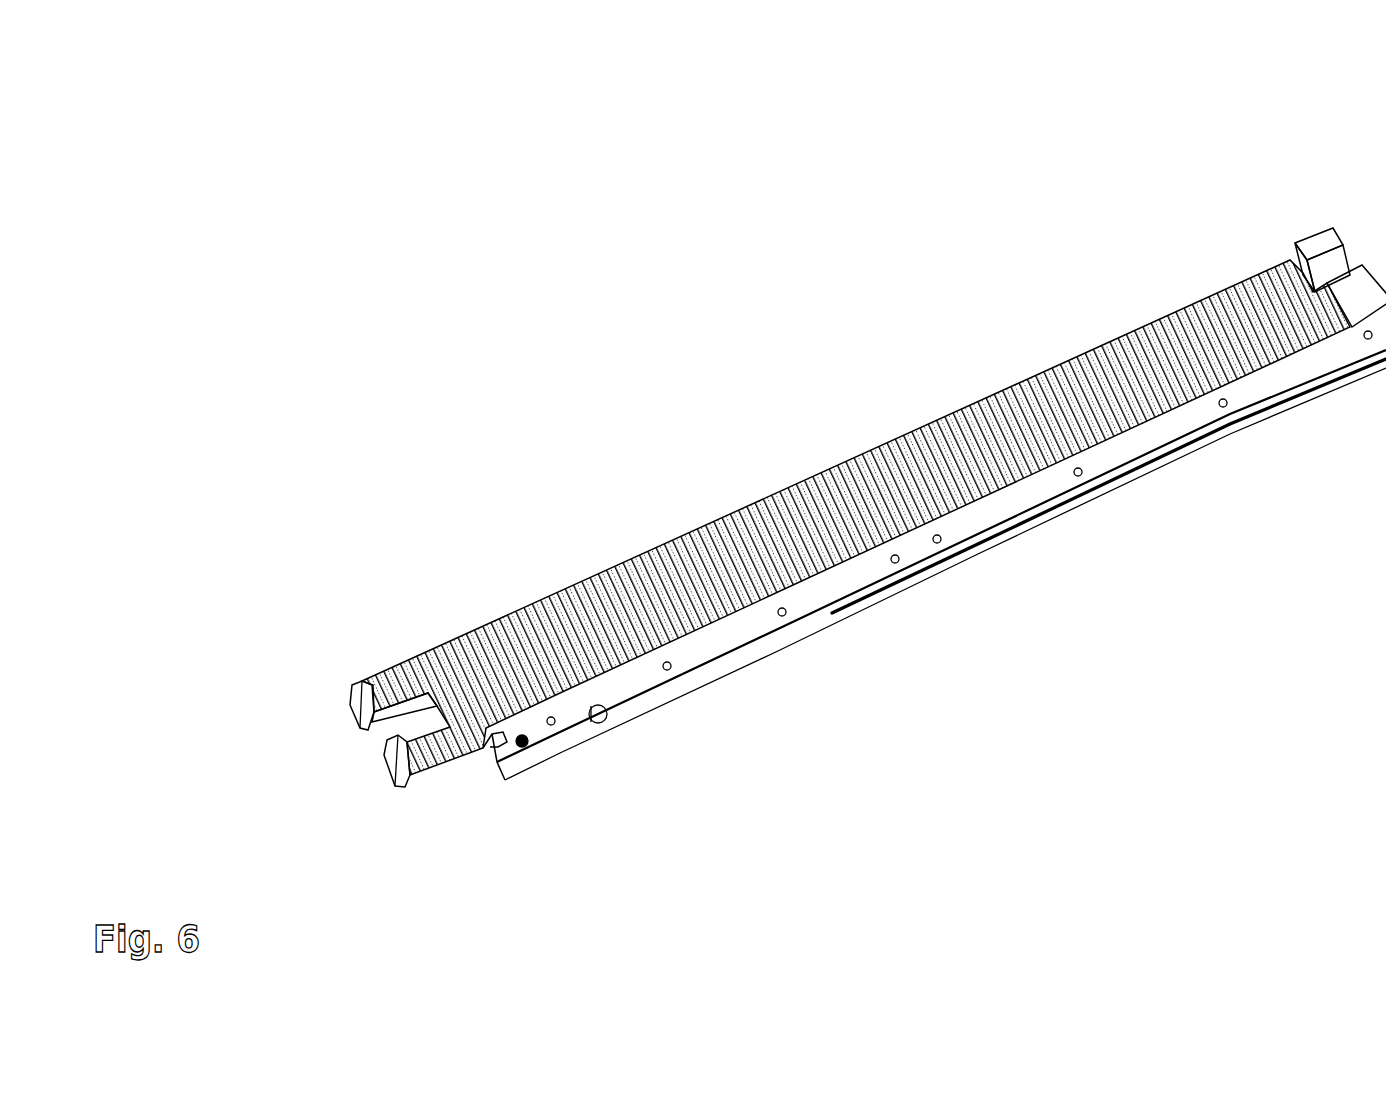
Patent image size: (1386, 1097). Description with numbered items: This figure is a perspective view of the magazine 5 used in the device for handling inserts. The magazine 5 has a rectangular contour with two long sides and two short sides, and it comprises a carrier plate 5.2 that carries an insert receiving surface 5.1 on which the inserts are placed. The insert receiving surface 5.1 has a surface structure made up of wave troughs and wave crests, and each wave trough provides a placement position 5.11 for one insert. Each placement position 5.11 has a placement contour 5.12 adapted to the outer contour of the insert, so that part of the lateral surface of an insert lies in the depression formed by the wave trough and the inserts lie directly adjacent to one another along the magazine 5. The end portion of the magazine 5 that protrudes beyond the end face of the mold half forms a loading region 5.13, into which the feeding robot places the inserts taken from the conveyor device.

The magazine 5 is at (839, 473).
The insert receiving surface 5.1 is at (839, 507).
The placement position 5.11 is at (856, 517).
The placement contour 5.12 is at (767, 508).
The loading region 5.13 is at (359, 646).
The carrier plate 5.2 is at (462, 757).